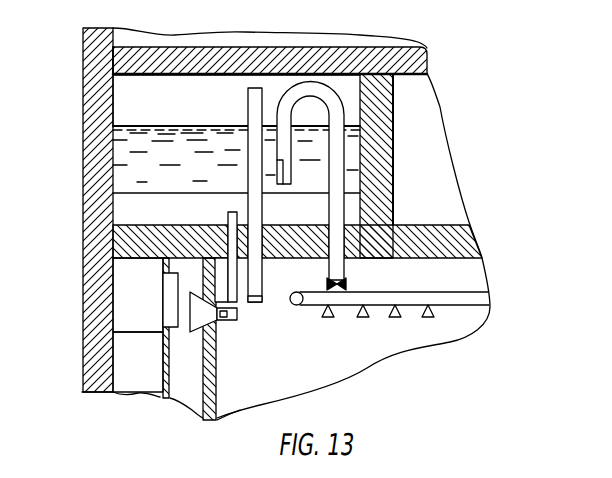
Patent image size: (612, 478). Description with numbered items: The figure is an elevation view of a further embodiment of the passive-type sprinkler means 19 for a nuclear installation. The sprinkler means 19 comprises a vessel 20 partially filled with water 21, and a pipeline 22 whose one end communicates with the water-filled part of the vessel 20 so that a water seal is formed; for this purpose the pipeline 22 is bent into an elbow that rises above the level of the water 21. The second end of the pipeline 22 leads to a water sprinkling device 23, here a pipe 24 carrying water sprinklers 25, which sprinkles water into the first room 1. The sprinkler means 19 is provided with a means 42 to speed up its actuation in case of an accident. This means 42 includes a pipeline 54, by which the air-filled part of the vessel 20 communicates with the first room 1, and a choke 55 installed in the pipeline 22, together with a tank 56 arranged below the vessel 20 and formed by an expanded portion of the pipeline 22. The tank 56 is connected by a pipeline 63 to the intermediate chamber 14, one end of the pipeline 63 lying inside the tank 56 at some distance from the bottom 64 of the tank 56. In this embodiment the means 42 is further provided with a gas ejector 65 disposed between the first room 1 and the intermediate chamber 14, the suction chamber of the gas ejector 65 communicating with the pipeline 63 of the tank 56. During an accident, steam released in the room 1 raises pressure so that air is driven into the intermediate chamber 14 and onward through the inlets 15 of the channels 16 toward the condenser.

The first room 1 is at (447, 277).
The intermediate chamber 14 is at (180, 364).
The inlets of channels 15 is at (125, 330).
The channels 16 is at (138, 381).
The passive-type sprinkler means 19 is at (128, 107).
The vessel 20 is at (113, 143).
The water 21 is at (125, 180).
The pipeline 22 is at (338, 144).
The water sprinkling device 23 is at (376, 320).
The pipe 24 is at (477, 298).
The water sprinklers 25 is at (427, 314).
The means to speed up the actuation 42 is at (240, 106).
The pipeline 54 is at (259, 292).
The choke 55 is at (345, 283).
The tank 56 is at (128, 213).
The pipeline 63 is at (234, 293).
The bottom of the tank 64 is at (168, 223).
The gas ejector 65 is at (223, 322).